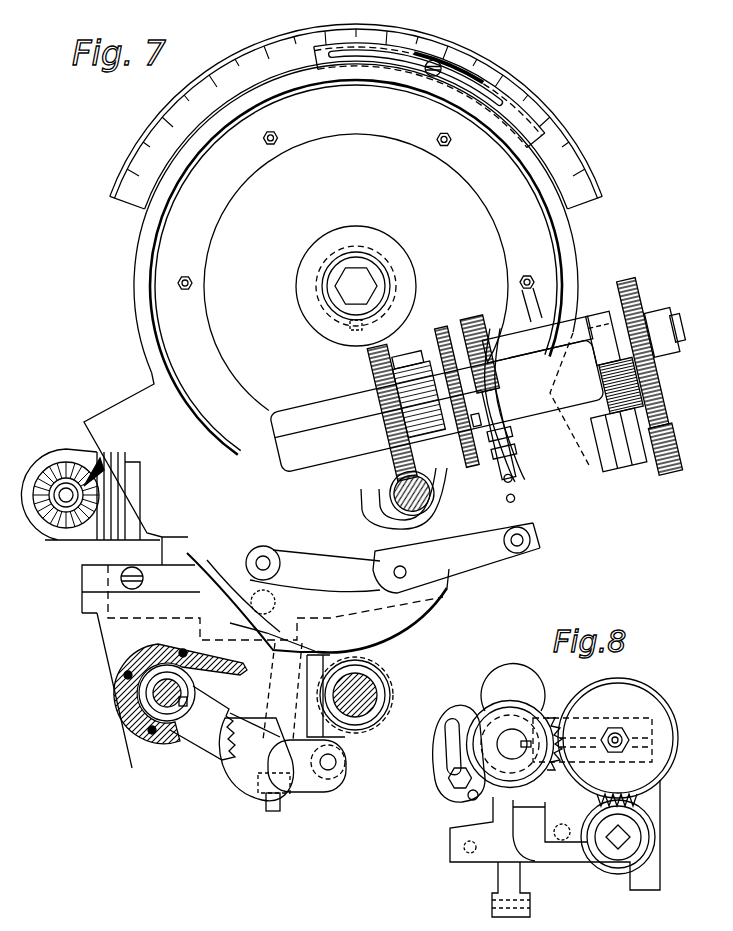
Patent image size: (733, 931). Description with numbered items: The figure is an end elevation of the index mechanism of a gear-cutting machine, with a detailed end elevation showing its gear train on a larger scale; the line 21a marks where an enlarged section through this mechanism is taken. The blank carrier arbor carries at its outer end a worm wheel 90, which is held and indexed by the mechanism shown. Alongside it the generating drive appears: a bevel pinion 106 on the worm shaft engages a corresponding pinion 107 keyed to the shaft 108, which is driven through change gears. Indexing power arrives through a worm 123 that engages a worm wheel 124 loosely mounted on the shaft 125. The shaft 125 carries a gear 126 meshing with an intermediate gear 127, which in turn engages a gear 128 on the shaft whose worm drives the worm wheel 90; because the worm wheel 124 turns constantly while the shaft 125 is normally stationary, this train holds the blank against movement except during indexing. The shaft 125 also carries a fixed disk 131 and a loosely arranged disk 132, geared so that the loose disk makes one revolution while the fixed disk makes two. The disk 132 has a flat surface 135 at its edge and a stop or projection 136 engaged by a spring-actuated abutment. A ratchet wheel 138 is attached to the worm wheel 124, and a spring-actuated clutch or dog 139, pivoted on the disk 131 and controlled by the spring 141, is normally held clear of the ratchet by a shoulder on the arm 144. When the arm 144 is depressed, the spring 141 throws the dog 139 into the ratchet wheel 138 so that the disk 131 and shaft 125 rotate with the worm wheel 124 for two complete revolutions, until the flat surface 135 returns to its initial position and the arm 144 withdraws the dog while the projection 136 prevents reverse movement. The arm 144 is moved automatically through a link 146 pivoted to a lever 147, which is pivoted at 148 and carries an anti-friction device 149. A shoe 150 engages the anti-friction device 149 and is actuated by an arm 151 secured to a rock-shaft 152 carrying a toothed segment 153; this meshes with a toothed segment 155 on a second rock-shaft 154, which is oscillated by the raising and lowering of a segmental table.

In FIG. 7, the section line 21a is at (413, 366).
In FIG. 7, the worm wheel 90 is at (350, 272).
In FIG. 7, the bevel pinion 106 is at (86, 478).
In FIG. 7, the pinion 107 is at (68, 470).
In FIG. 7, the shaft 108 is at (72, 497).
In FIG. 7, the worm 123 is at (393, 483).
In FIG. 7, the worm wheel 124 is at (368, 364).
In FIG. 8, the shaft 125 is at (508, 738).
In FIG. 7, the gear 126 is at (637, 304).
In FIG. 8, the gear 126 is at (508, 701).
In FIG. 7, the intermediate gear 127 is at (629, 281).
In FIG. 8, the intermediate gear 127 is at (605, 742).
In FIG. 7, the gear 128 is at (672, 477).
In FIG. 8, the gear 128 is at (610, 865).
In FIG. 7, the disk 131 is at (440, 336).
In FIG. 7, the loose disk 132 is at (467, 321).
In FIG. 7, the flat surface 135 is at (505, 440).
In FIG. 7, the stop or projection 136 is at (498, 387).
In FIG. 7, the ratchet wheel 138 is at (440, 417).
In FIG. 7, the clutch or dog 139 is at (453, 497).
In FIG. 7, the spring 141 is at (438, 396).
In FIG. 7, the arm 144 is at (489, 450).
In FIG. 7, the link 146 is at (532, 541).
In FIG. 7, the lever 147 is at (460, 552).
In FIG. 7, the pivot 148 is at (395, 566).
In FIG. 7, the anti-friction device 149 is at (263, 556).
In FIG. 7, the shoe 150 is at (212, 573).
In FIG. 7, the arm 151 is at (300, 777).
In FIG. 7, the rock-shaft 152 is at (331, 760).
In FIG. 7, the toothed segment 153 is at (217, 757).
In FIG. 7, the second rock-shaft 154 is at (138, 728).
In FIG. 7, the toothed segment 155 is at (190, 726).